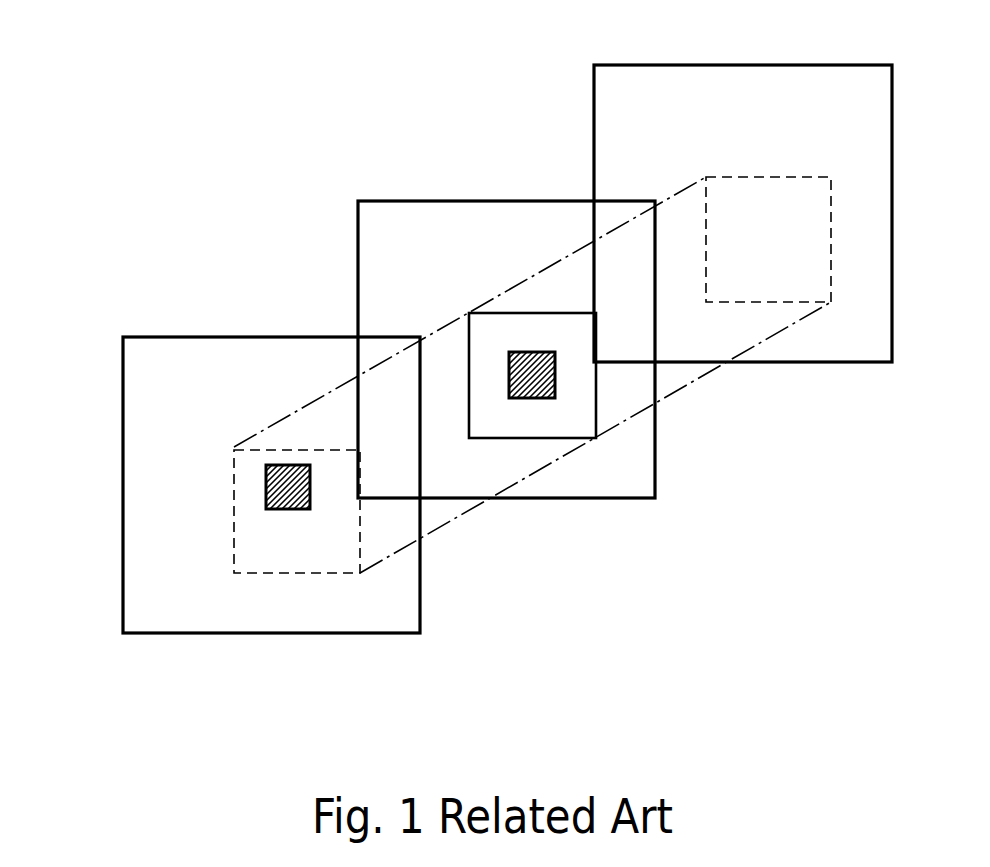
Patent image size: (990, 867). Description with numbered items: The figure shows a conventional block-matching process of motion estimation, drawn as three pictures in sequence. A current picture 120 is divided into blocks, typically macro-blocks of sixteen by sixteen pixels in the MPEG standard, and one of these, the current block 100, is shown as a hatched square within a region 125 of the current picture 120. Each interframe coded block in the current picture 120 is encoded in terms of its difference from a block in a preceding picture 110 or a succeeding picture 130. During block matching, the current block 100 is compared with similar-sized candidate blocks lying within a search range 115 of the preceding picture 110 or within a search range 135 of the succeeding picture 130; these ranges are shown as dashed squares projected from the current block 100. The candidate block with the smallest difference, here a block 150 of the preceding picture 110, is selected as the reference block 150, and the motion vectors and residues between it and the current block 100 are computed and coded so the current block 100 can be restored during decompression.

The current block 100 is at (532, 398).
The preceding picture 110 is at (143, 337).
The search range 115 is at (233, 512).
The current picture 120 is at (393, 201).
The region on second layer (solid inner square) 125 is at (596, 390).
The succeeding picture 130 is at (632, 65).
The search range 135 is at (831, 238).
The reference block 150 is at (287, 510).